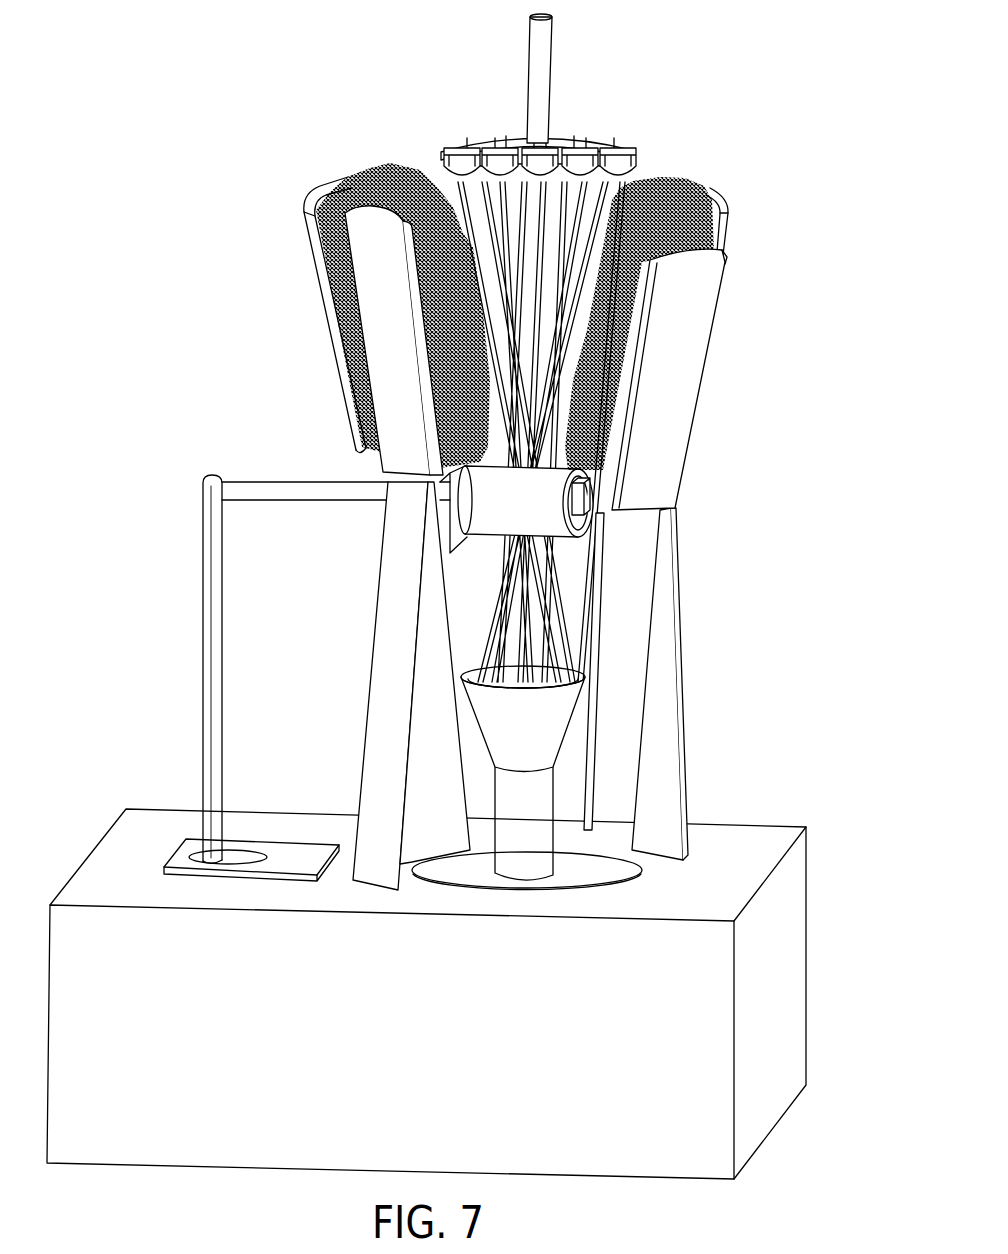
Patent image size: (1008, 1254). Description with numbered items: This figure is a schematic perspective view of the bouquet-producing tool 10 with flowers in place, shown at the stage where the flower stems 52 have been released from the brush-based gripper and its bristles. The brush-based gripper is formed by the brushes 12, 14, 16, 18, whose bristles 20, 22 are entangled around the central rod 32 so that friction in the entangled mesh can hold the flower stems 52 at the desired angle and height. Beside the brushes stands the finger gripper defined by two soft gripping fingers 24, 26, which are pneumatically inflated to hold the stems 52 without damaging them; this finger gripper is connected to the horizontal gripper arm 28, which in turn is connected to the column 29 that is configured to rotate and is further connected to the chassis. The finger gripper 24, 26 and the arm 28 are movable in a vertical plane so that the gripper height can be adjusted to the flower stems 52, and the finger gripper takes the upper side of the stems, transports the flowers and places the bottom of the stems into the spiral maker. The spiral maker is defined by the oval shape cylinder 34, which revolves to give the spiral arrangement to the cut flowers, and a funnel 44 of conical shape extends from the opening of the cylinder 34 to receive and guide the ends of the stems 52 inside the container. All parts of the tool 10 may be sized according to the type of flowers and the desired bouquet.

The bouquet-producing tool 10 is at (465, 596).
The brush-based gripper brush 12 is at (723, 230).
The brush-based gripper brush 14 is at (662, 332).
The brush-based gripper brush 16 is at (386, 444).
The brush-based gripper brush 18 is at (315, 230).
The bristles 20 is at (377, 165).
The bristles 22 is at (663, 183).
The gripping finger 24 is at (638, 507).
The gripping finger 26 is at (550, 512).
The gripper arm 28 is at (283, 483).
The column 29 is at (214, 695).
The rod 32 is at (543, 60).
The oval shape cylinder 34 is at (532, 818).
The funnel 44 is at (543, 722).
The flower stems 52 is at (553, 577).